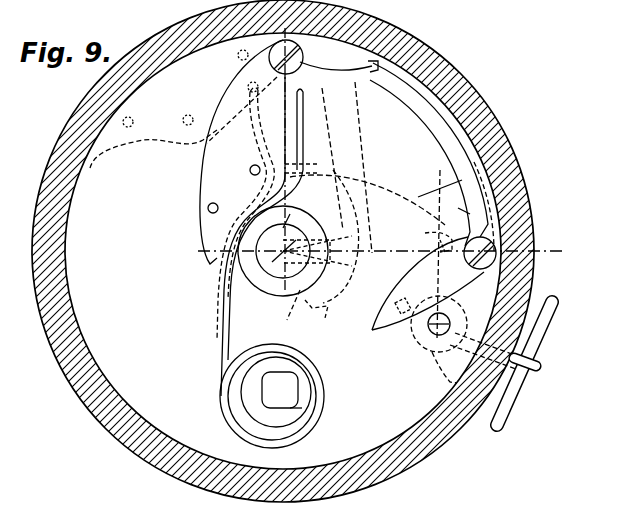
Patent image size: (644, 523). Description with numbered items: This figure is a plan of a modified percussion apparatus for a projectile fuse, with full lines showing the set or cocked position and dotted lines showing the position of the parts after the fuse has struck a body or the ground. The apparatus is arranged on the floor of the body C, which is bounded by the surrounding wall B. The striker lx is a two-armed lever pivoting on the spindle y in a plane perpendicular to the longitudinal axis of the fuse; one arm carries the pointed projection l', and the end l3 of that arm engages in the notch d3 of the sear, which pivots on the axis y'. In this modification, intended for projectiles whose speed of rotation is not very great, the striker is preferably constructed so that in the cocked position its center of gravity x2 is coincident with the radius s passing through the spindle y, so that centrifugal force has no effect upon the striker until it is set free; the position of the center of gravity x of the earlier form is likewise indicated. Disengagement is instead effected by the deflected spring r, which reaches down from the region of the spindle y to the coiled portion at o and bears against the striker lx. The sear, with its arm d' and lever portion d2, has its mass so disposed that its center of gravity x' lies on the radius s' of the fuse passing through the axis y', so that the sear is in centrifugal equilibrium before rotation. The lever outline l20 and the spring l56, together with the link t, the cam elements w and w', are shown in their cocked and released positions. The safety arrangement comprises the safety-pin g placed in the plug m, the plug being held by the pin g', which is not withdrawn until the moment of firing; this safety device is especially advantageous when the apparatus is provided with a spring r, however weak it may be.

The casing ring B is at (74, 385).
The body C is at (191, 151).
The spindle y is at (307, 160).
The axis of the sear y' is at (382, 263).
The top pivot link t is at (372, 72).
The main lever plate l20 is at (241, 190).
The spring l56 is at (200, 170).
The center of gravity of the striker x is at (291, 129).
The center of gravity of the striker x2 is at (302, 140).
The deflected spring r is at (230, 316).
The central hub o is at (283, 251).
The radius of the fuse s is at (294, 208).
The cam w is at (317, 251).
The cam follower w' is at (313, 250).
The end of the striker arm l3 is at (387, 270).
The striker lx is at (367, 167).
The curved arm d' is at (441, 166).
The pointed projection l' is at (440, 170).
The notch of the sear d3 is at (468, 233).
The radius of the fuse s' is at (422, 243).
The center of gravity of the sear x' is at (432, 255).
The lever d2 is at (428, 283).
The safety-pin g is at (461, 334).
The plug m is at (436, 370).
The pin g' is at (534, 363).